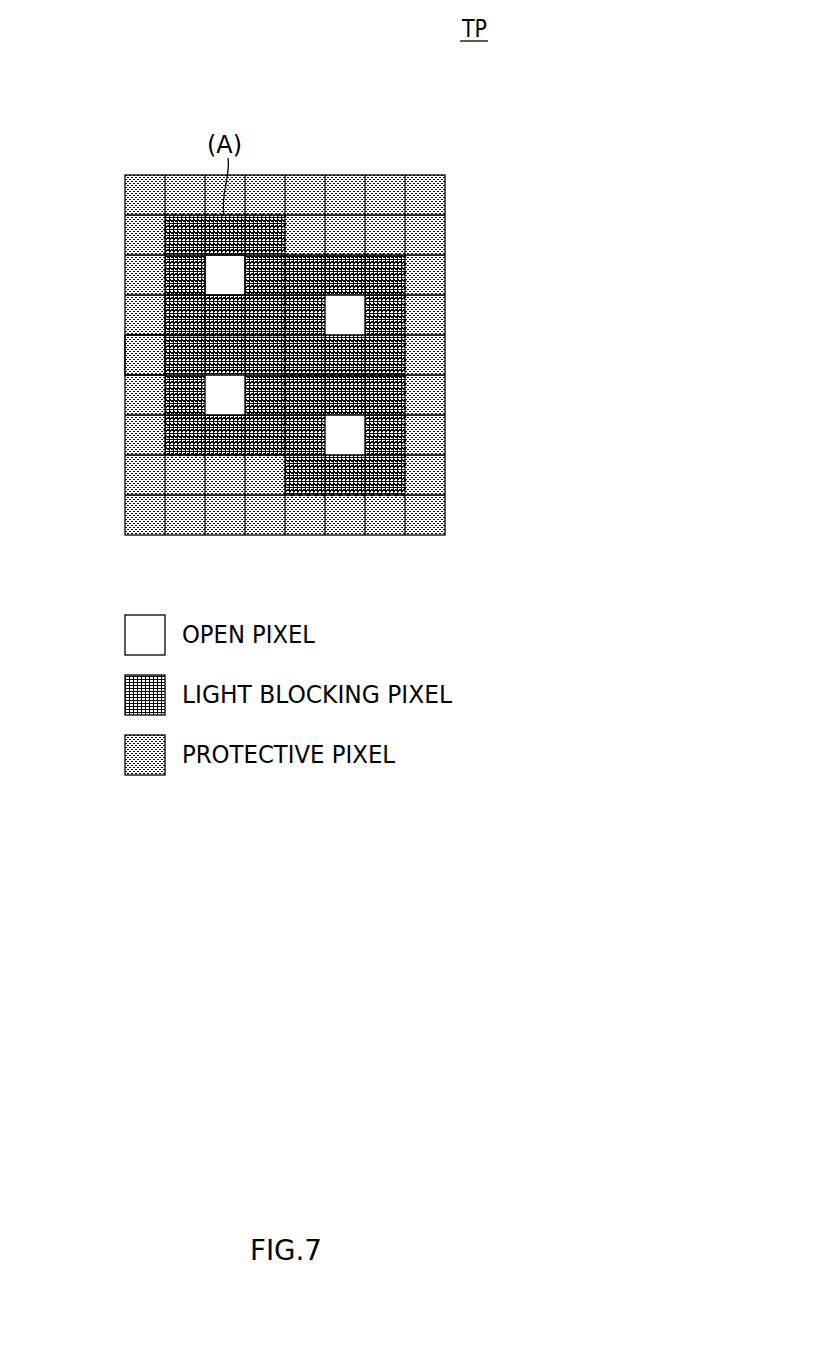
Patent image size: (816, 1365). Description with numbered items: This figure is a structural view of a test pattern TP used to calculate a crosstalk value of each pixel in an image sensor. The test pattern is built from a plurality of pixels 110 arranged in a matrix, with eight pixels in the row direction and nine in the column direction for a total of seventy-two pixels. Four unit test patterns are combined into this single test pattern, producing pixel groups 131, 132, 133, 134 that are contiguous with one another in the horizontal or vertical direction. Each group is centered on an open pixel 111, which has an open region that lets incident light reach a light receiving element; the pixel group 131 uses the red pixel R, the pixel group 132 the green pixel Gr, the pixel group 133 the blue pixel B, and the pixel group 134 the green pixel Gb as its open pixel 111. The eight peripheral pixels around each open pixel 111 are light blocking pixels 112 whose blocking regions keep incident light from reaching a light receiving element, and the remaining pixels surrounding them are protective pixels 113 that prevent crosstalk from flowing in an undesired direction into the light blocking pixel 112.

The pixels 110 is at (452, 238).
The open pixel 111 is at (210, 275).
The light blocking pixel 112 is at (187, 318).
The protective pixel 113 is at (148, 357).
The pixel group 131 is at (155, 237).
The pixel group 132 is at (155, 397).
The pixel group 133 is at (414, 318).
The pixel group 134 is at (414, 436).